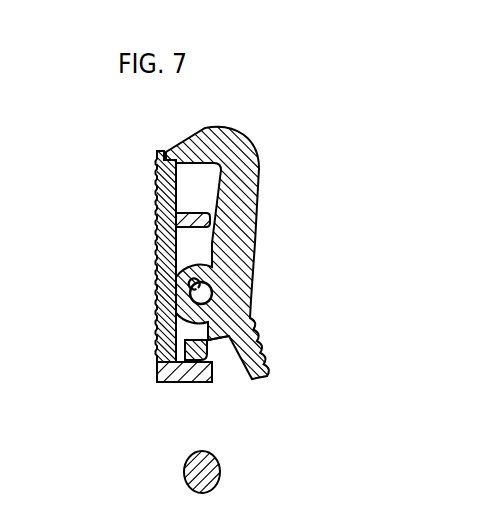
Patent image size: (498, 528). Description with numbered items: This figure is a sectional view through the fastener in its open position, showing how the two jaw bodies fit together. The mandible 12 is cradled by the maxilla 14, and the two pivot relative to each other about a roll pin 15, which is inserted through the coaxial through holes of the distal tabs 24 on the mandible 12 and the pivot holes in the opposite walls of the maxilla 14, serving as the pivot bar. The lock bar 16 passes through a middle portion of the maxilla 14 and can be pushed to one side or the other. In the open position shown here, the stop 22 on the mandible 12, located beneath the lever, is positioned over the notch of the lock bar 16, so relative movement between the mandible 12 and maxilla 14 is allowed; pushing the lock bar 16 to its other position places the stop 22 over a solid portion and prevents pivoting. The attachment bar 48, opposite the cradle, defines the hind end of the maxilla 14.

The mandible 12 is at (242, 170).
The maxilla 14 is at (162, 217).
The roll pin 15 is at (192, 288).
The distal tabs 24 is at (191, 300).
The lock bar 16 is at (195, 350).
The stop 22 is at (215, 336).
The attachment bar 48 is at (183, 468).